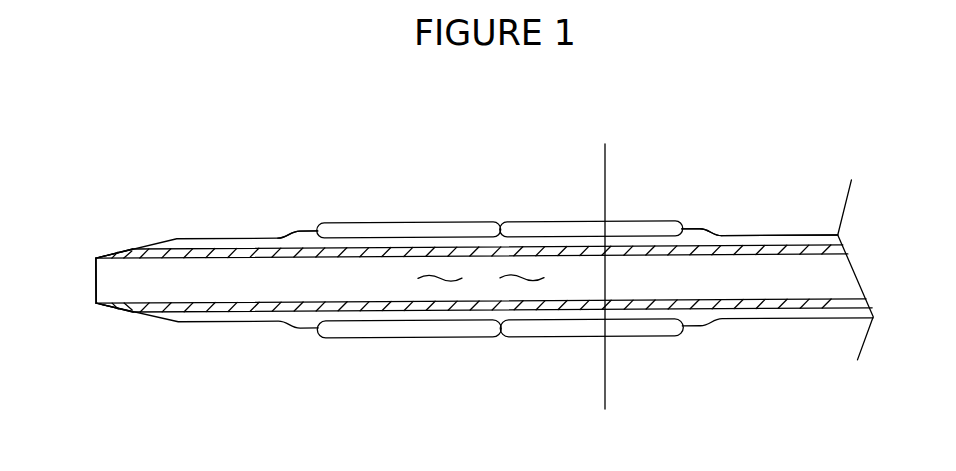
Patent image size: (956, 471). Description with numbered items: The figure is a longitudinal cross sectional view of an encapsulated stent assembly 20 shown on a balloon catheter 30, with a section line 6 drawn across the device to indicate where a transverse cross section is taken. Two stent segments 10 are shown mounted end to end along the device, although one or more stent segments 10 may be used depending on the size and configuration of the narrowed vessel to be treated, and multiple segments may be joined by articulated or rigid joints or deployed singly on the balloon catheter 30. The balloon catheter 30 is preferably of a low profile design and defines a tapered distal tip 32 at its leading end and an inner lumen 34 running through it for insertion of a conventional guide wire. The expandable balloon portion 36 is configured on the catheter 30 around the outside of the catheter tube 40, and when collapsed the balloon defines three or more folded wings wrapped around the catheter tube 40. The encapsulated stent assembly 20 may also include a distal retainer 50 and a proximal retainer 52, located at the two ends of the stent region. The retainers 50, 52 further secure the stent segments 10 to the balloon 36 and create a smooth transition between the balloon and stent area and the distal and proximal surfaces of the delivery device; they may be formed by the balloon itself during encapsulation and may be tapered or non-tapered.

The section line 6- 6 is at (605, 409).
The stent segment 10 is at (412, 227).
The encapsulated stent assembly 20 is at (240, 352).
The balloon catheter 30 is at (807, 225).
The tapered distal tip 32 is at (125, 306).
The inner lumen 34 is at (481, 278).
The expandable balloon portion 36 is at (750, 316).
The catheter tube 40 is at (818, 309).
The distal retainer 50 is at (296, 231).
The proximal retainer 52 is at (700, 228).